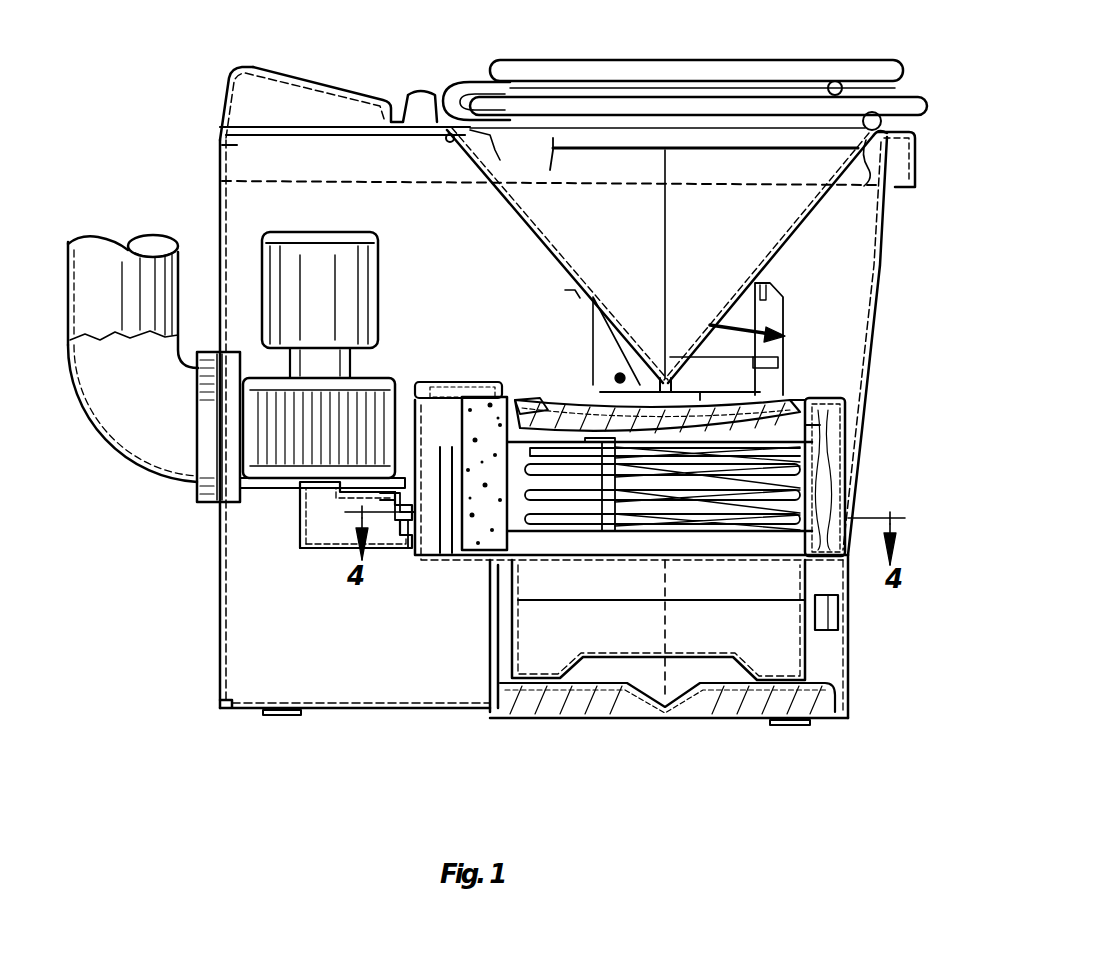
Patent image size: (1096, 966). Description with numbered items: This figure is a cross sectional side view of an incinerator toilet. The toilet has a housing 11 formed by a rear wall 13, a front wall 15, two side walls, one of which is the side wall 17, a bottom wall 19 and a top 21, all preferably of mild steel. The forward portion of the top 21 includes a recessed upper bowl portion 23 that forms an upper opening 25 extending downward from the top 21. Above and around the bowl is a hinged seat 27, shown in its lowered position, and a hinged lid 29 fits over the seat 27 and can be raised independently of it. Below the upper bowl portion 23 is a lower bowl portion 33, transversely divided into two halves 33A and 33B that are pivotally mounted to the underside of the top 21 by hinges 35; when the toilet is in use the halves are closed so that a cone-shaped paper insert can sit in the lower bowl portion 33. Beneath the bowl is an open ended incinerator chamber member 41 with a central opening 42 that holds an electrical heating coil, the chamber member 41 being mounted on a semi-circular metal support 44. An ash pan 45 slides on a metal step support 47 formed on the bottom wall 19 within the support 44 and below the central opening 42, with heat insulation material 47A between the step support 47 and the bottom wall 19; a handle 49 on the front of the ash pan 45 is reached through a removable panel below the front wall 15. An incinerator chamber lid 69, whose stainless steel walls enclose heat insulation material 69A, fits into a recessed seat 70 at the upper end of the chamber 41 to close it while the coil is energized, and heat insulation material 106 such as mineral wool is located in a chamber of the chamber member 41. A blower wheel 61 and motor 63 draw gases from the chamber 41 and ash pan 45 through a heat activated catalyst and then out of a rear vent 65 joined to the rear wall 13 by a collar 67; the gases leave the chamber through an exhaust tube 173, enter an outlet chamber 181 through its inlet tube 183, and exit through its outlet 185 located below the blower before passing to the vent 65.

The housing 11 is at (188, 58).
The rear wall 13 is at (220, 205).
The front wall 15 is at (878, 297).
The side wall 17 is at (866, 240).
The bottom wall 19 is at (430, 712).
The top 21 is at (309, 76).
The upper bowl portion 23 is at (503, 182).
The upper opening 25 is at (556, 140).
The hinged seat 27 is at (915, 100).
The hinged lid 29 is at (705, 59).
The lower bowl portion 33 is at (662, 264).
The lower bowl half 33A is at (593, 291).
The lower bowl half 33B is at (790, 240).
The hinges 35 is at (445, 143).
The incinerator chamber member 41 is at (847, 433).
The central opening 42 is at (703, 554).
The semi-circular metal support 44 is at (490, 640).
The ash pan 45 is at (848, 686).
The metal step support 47 is at (838, 724).
The heat insulation material 47A is at (598, 715).
The handle 49 is at (840, 616).
The blower wheel 61 is at (262, 438).
The motor 63 is at (383, 255).
The rear vent 65 is at (135, 478).
The collar 67 is at (207, 494).
The incinerator chamber lid 69 is at (543, 402).
The heat insulation material 69A is at (575, 396).
The recessed seat 70 is at (818, 398).
The heat insulation material 106 is at (843, 468).
The exhaust tube 173 is at (430, 535).
The outlet chamber 181 is at (326, 550).
The inlet tube 183 is at (398, 548).
The outlet 185 is at (312, 498).